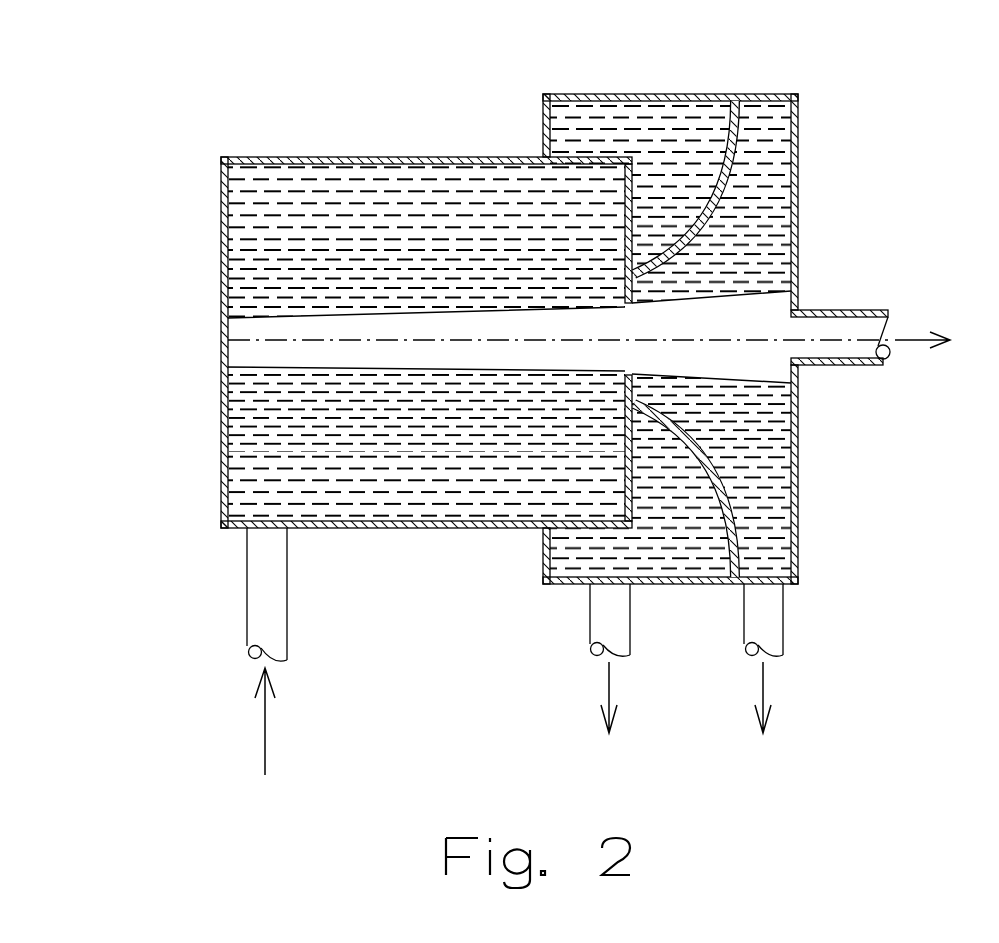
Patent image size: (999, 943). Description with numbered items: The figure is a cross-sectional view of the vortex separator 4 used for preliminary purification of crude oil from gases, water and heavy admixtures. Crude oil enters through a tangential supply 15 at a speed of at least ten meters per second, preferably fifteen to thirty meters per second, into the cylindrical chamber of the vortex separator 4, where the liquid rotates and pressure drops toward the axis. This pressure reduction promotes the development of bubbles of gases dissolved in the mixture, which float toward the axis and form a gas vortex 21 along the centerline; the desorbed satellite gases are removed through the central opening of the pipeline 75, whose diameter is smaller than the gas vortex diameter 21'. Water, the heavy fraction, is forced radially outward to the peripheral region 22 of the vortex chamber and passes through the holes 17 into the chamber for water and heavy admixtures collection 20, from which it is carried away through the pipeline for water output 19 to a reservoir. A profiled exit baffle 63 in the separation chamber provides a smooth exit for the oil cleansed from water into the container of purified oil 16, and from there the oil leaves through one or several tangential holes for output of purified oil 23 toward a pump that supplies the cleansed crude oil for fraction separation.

The vortex separator 4 is at (298, 143).
The tangential supply 15 is at (267, 622).
The container of purified oil 16 is at (248, 275).
The holes 17 is at (623, 180).
The pipeline for water output 19 is at (605, 630).
The chamber for water and heavy admixtures collection 20 is at (592, 115).
The gas vortex 21 is at (511, 347).
The gas vortex diameter 21' is at (848, 386).
The peripheral region 22 is at (482, 175).
The tangential holes for output of purified oil 23 is at (757, 620).
The profiled exit baffle 63 is at (738, 517).
The pipeline for output of satellite gases 75 is at (813, 330).